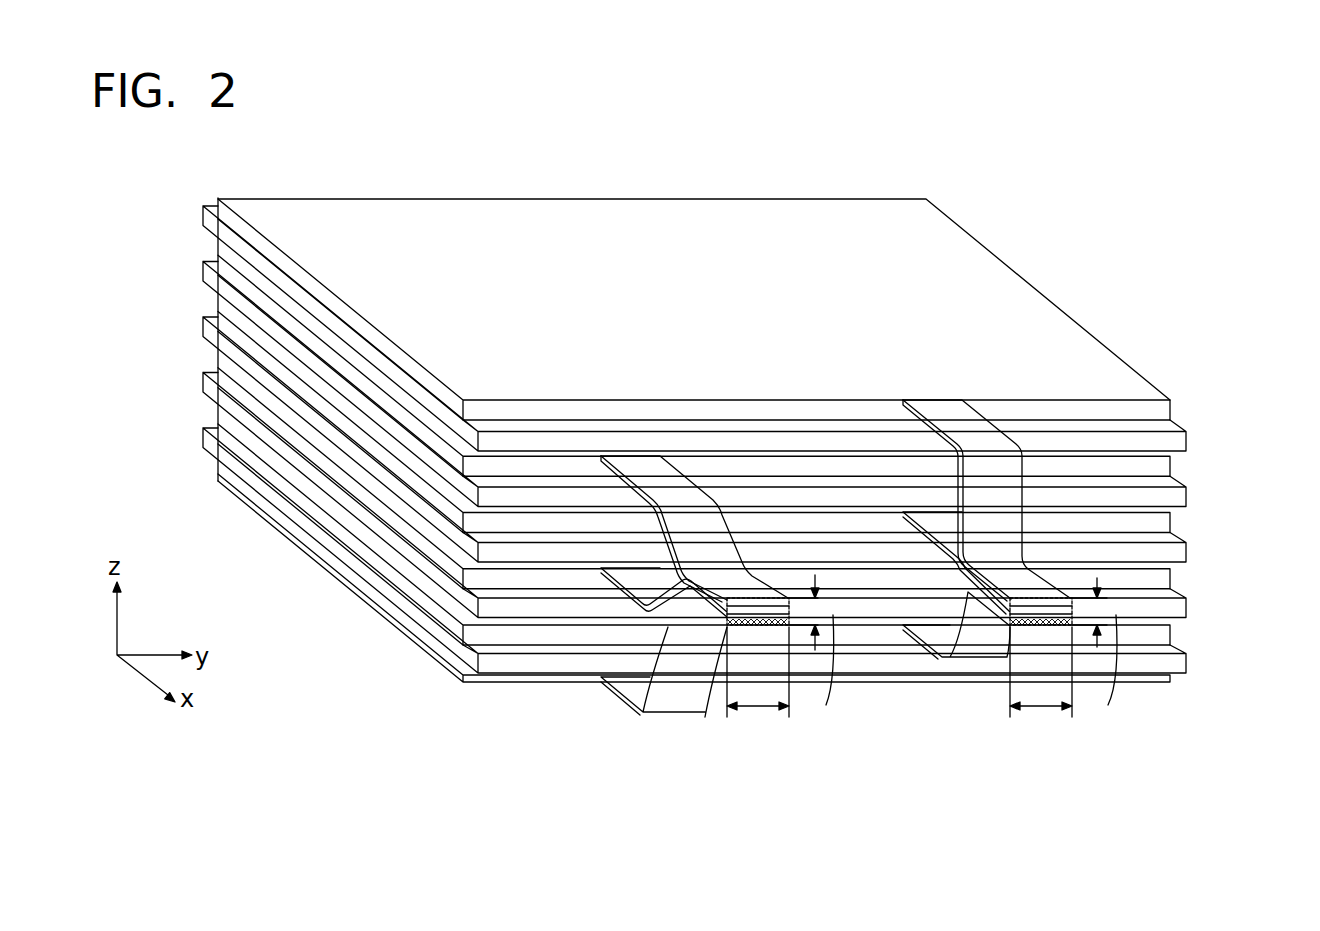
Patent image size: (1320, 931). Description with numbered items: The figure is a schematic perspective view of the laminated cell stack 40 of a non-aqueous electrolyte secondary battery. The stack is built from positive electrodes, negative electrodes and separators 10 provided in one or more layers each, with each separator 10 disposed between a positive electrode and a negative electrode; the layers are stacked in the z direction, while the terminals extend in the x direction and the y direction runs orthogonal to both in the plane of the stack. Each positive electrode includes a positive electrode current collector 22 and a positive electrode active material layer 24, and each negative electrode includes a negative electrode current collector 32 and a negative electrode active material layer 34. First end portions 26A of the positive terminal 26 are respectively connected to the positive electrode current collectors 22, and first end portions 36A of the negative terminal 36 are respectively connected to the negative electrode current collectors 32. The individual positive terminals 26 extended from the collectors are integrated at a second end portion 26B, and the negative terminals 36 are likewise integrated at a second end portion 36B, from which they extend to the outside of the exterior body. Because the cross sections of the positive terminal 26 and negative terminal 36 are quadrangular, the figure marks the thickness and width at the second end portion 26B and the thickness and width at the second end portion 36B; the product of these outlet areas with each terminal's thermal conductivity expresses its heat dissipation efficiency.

The laminated cell stack 40 is at (1160, 122).
The separator 10 is at (1173, 553).
The positive electrode current collector 22 is at (1163, 513).
The positive electrode active material layer 24 is at (768, 422).
The negative electrode current collector 32 is at (1170, 567).
The negative electrode active material layer 34 is at (768, 491).
The positive terminal 26 is at (956, 623).
The first end portion of the positive terminal 26A is at (903, 623).
The second end portion of the positive terminal 26B is at (1012, 612).
The negative terminal 36 is at (594, 650).
The first end portion of the negative terminal 36A is at (593, 680).
The second end portion of the negative terminal 36B is at (708, 600).